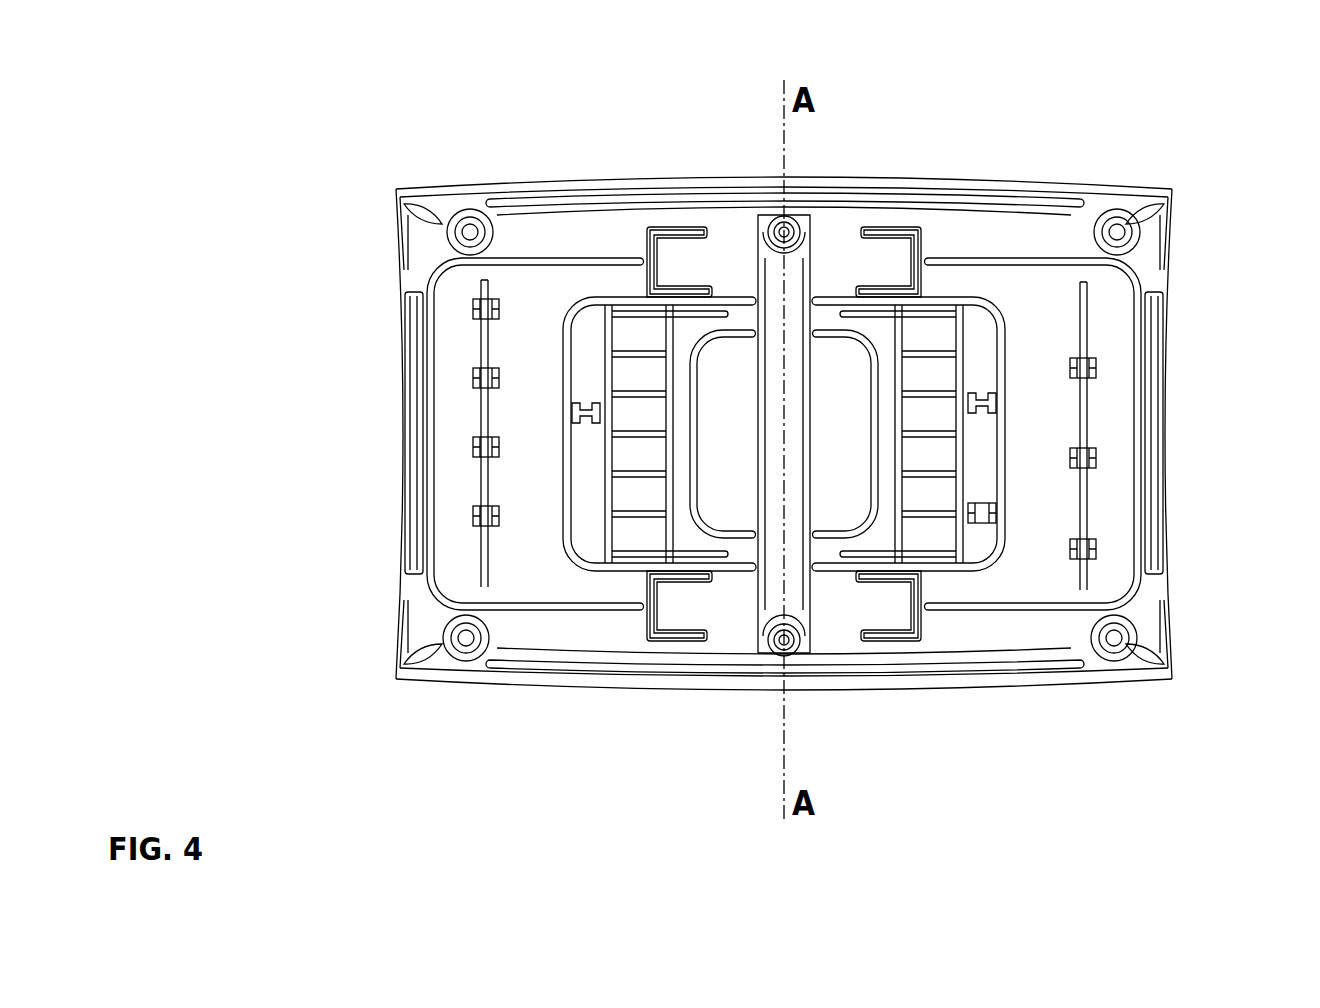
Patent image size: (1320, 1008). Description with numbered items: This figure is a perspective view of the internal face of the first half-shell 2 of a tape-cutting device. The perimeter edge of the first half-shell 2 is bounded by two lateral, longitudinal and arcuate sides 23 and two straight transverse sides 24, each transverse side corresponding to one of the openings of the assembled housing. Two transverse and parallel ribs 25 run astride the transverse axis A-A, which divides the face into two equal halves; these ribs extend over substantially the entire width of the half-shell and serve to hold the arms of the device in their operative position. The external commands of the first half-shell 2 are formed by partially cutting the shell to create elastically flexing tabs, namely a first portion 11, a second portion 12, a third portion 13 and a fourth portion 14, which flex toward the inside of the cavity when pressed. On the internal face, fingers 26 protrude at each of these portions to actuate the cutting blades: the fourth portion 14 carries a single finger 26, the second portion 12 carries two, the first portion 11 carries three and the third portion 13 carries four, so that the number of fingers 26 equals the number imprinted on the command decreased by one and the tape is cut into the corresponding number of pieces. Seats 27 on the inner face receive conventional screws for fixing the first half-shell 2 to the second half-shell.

The first half-shell 2 is at (392, 143).
The first portion 11 is at (520, 344).
The second portion 12 is at (598, 363).
The third portion 13 is at (1040, 572).
The fourth portion 14 is at (987, 343).
The lateral, longitudinal and arcuate sides 23 is at (905, 207).
The straight transverse sides 24 is at (404, 530).
The transverse and parallel ribs 25 is at (763, 510).
The fingers 26 is at (473, 512).
The seats 27 is at (793, 225).